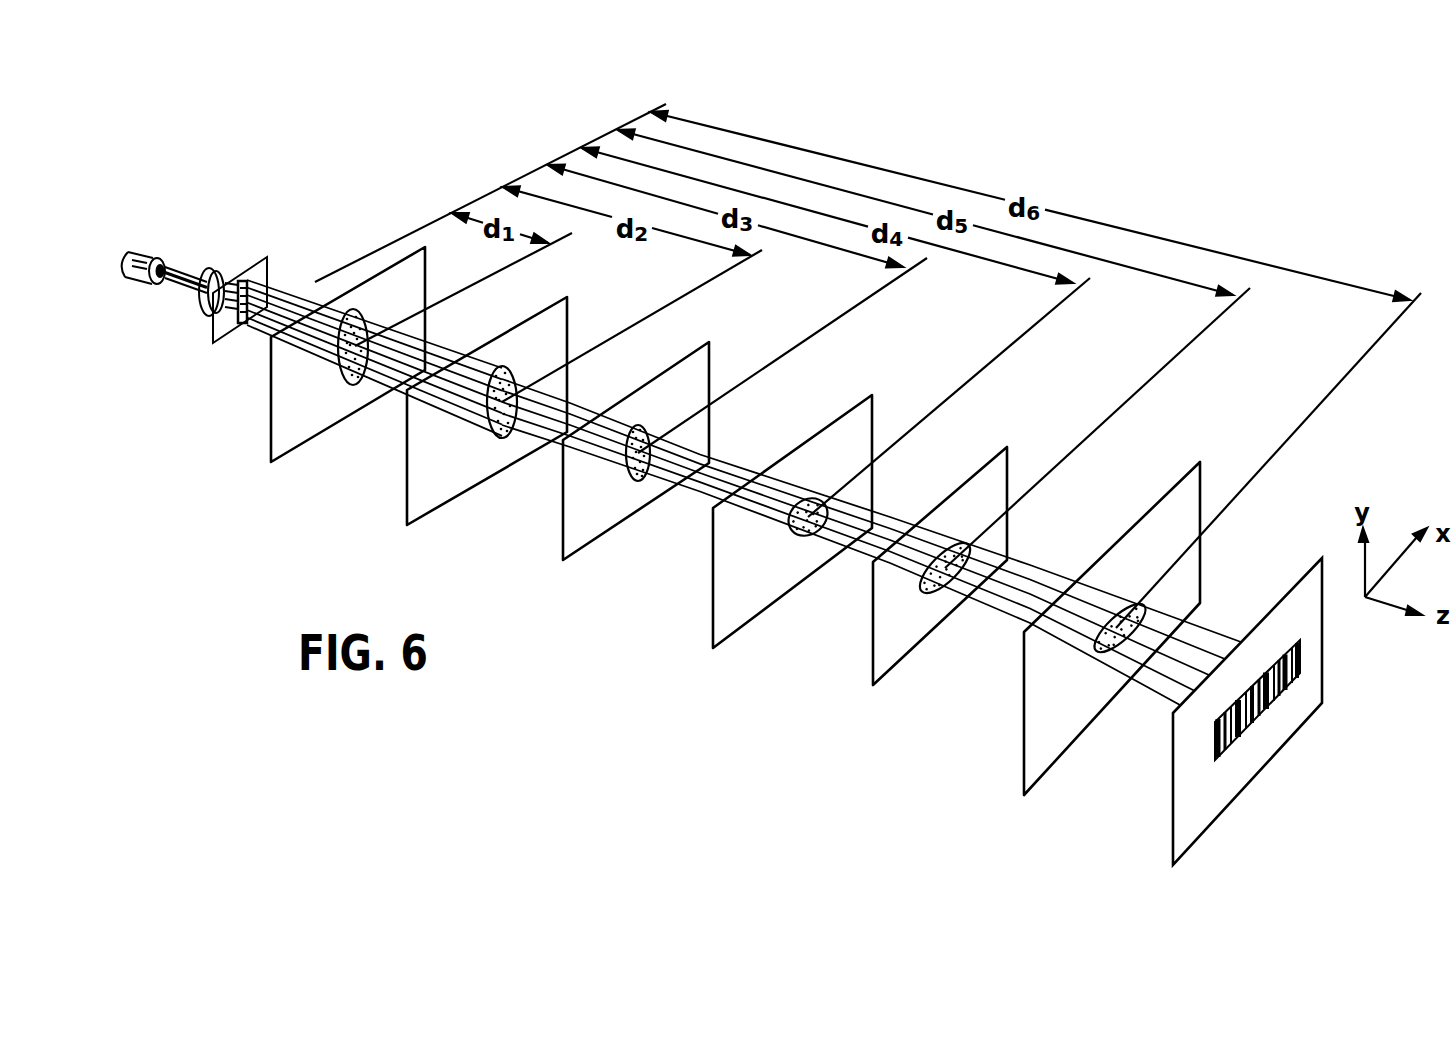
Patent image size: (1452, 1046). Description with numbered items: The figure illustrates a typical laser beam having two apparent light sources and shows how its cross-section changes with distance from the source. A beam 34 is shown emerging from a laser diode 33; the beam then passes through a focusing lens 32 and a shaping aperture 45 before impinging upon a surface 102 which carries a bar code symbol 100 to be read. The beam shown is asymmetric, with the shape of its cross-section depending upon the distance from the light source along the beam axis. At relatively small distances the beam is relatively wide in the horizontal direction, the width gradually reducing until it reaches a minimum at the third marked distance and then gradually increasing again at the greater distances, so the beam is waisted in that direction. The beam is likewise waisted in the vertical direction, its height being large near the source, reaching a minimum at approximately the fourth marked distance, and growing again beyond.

The laser diode 33 is at (148, 252).
The beam 34 is at (178, 286).
The focusing lens 32 is at (204, 316).
The shaping aperture 45 is at (270, 275).
The bar code symbol 100 is at (1285, 708).
The surface 102 is at (1226, 803).